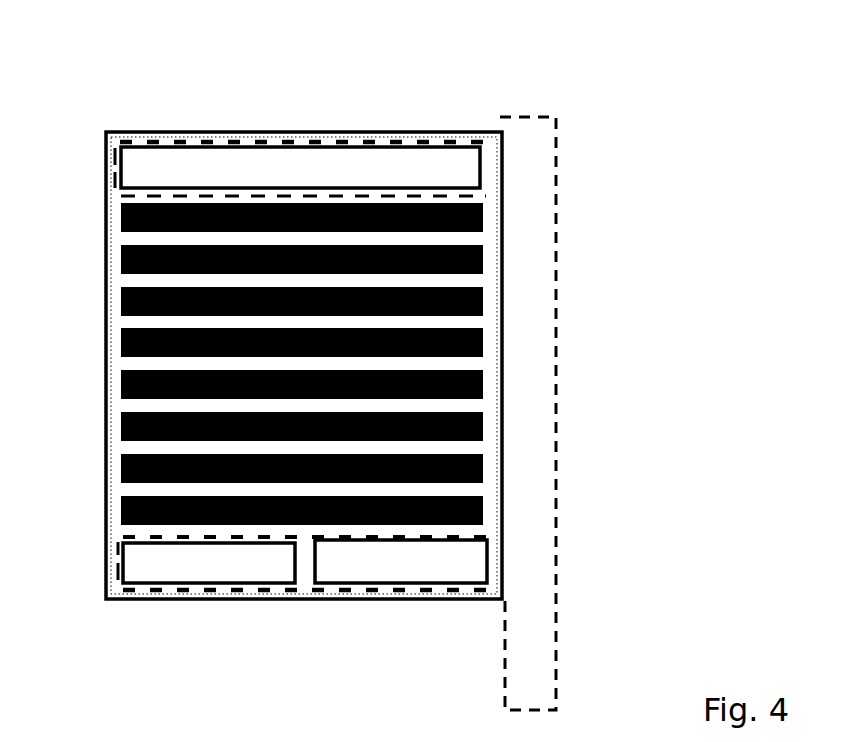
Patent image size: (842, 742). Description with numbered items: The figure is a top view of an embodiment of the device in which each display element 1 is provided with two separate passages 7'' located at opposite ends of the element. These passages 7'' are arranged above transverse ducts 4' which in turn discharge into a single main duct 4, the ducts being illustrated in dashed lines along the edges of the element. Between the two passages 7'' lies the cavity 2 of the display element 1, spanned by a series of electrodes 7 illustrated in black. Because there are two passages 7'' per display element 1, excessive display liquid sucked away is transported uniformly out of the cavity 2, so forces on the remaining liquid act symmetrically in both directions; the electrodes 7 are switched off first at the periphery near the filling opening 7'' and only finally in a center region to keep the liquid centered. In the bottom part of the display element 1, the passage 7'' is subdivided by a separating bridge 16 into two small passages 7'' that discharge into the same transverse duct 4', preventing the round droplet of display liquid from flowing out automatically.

The display element 1 is at (606, 92).
The cavity 2 is at (253, 285).
The main duct 4 is at (602, 413).
The transverse duct 4' is at (282, 362).
The electrode 7 is at (251, 238).
The passage 7'' is at (304, 375).
The separating bridge 16 is at (303, 572).